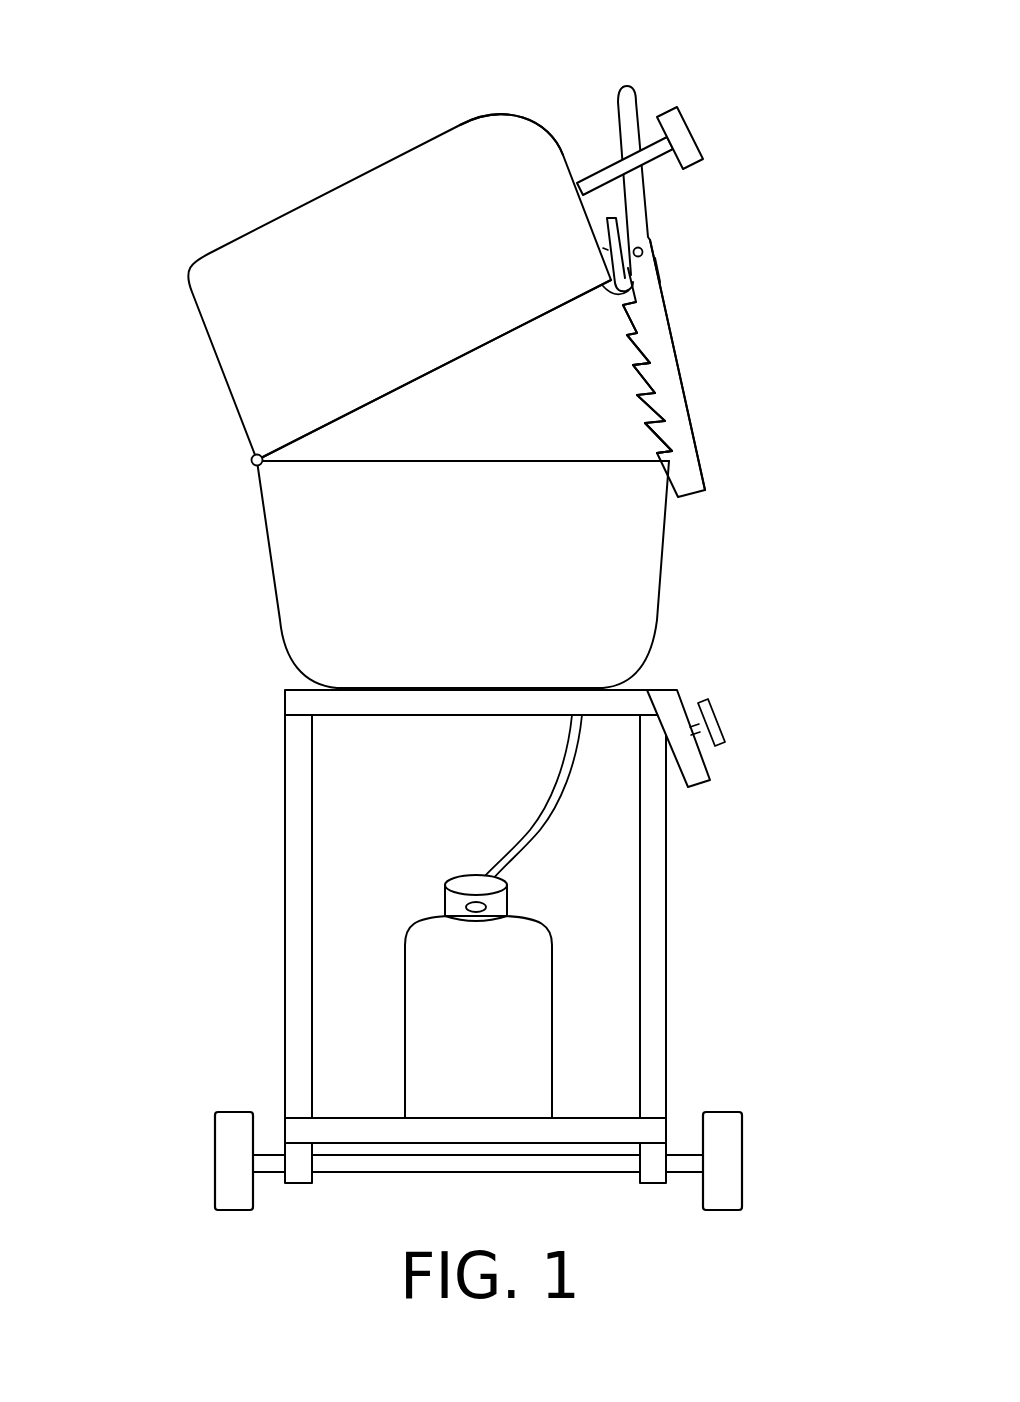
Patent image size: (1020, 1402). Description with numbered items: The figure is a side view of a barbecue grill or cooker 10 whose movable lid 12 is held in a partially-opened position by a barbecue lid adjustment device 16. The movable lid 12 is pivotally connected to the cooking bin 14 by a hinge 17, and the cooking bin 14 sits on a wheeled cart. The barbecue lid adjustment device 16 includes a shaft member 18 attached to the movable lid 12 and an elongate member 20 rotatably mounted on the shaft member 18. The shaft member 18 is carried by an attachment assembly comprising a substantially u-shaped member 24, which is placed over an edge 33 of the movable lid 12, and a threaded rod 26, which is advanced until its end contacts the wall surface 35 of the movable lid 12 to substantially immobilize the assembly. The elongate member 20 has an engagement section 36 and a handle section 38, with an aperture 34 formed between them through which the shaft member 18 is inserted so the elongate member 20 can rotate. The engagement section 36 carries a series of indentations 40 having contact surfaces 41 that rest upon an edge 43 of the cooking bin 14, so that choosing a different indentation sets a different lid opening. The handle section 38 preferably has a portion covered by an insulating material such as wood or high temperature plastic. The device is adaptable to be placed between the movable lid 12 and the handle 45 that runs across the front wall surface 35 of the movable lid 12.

The barbecue grill or cooker 10 is at (196, 477).
The movable lid 12 is at (236, 303).
The cooking bin 14 is at (330, 615).
The barbecue lid adjustment device 16 is at (720, 337).
The hinge 17 is at (247, 484).
The shaft member 18 is at (644, 250).
The elongate member 20 is at (662, 290).
The substantially u-shaped member 24 is at (612, 206).
The threaded rod 26 is at (605, 292).
The edge of the movable lid 33 is at (444, 386).
The aperture 34 is at (662, 262).
The wall surface 35 is at (535, 92).
The engagement section 36 is at (599, 410).
The handle section 38 is at (637, 98).
The indentations 40 is at (637, 378).
The contact surfaces 41 is at (642, 414).
The edge of the cooking bin 43 is at (424, 450).
The handle 45 is at (692, 128).